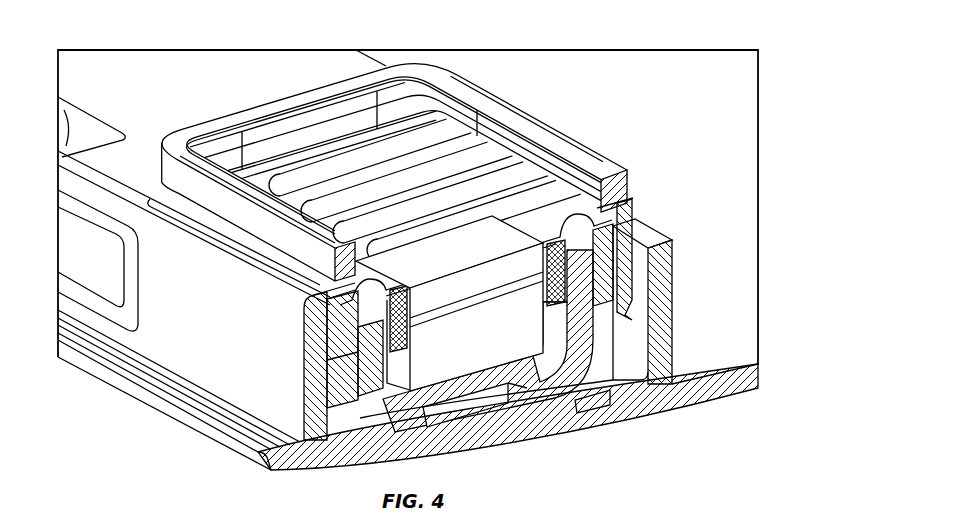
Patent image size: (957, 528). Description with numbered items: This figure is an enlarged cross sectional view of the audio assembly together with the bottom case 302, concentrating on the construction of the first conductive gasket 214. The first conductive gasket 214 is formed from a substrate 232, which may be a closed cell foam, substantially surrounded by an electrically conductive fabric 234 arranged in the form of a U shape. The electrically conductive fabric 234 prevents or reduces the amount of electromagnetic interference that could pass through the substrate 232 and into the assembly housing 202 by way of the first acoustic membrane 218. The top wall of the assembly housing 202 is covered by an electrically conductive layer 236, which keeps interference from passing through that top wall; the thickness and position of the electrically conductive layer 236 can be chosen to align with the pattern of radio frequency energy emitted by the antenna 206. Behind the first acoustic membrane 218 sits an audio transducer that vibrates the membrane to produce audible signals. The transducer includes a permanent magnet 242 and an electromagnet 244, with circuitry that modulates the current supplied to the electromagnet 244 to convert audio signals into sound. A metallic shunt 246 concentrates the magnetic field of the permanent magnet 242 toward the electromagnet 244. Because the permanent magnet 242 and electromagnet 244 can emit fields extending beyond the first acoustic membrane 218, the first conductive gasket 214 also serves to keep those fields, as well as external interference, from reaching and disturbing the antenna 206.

The assembly housing 202 is at (394, 151).
The antenna 206 is at (98, 320).
The first conductive gasket 214 is at (643, 165).
The first acoustic membrane 218 is at (323, 177).
The substrate 232 is at (377, 107).
The electrically conductive fabric 234 is at (562, 138).
The electrically conductive layer 236 is at (185, 111).
The permanent magnet 242 is at (617, 372).
The electromagnet 244 is at (488, 354).
The metallic shunt 246 is at (530, 387).
The bottom case 302 is at (717, 360).